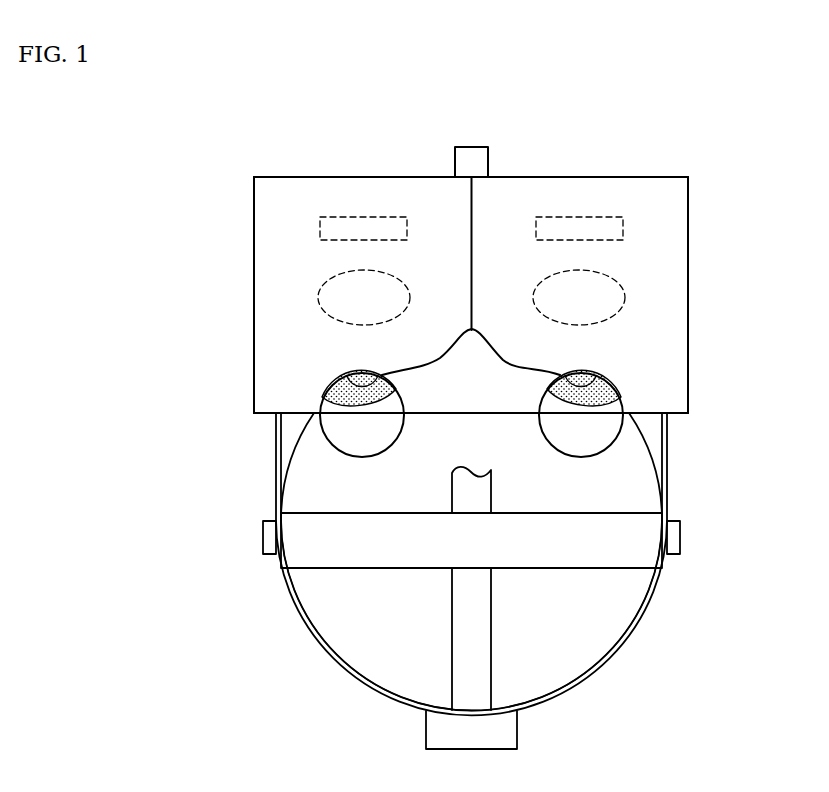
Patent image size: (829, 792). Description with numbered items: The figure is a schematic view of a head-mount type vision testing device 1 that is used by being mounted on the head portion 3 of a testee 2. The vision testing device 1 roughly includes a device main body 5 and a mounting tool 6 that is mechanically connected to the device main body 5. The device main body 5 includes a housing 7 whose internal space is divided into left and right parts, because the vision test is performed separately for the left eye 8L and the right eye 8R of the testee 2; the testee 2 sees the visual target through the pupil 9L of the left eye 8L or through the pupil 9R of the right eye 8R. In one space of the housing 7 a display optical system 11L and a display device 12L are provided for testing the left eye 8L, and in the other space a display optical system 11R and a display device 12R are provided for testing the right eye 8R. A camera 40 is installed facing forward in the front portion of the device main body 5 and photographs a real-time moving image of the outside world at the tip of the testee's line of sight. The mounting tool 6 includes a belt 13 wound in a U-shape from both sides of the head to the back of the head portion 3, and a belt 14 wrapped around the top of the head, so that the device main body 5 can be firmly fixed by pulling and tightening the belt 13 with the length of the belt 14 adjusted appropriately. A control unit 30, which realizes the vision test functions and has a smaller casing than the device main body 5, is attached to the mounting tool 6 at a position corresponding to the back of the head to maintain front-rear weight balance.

The vision testing device 1 is at (640, 147).
The testee 2 is at (273, 640).
The head portion 3 is at (593, 626).
The device main body 5 is at (345, 177).
The housing 7 is at (471, 295).
The mounting tool 6 is at (658, 600).
The left eye 8L is at (338, 438).
The right eye 8R is at (592, 444).
The pupil 9L is at (357, 373).
The pupil 9R is at (585, 373).
The display optical system 11L is at (330, 333).
The display optical system 11R is at (615, 338).
The display device 12L is at (320, 232).
The display device 12R is at (623, 232).
The belt 13 is at (280, 588).
The belt 14 is at (396, 552).
The control unit 30 is at (503, 730).
The camera 40 is at (478, 160).